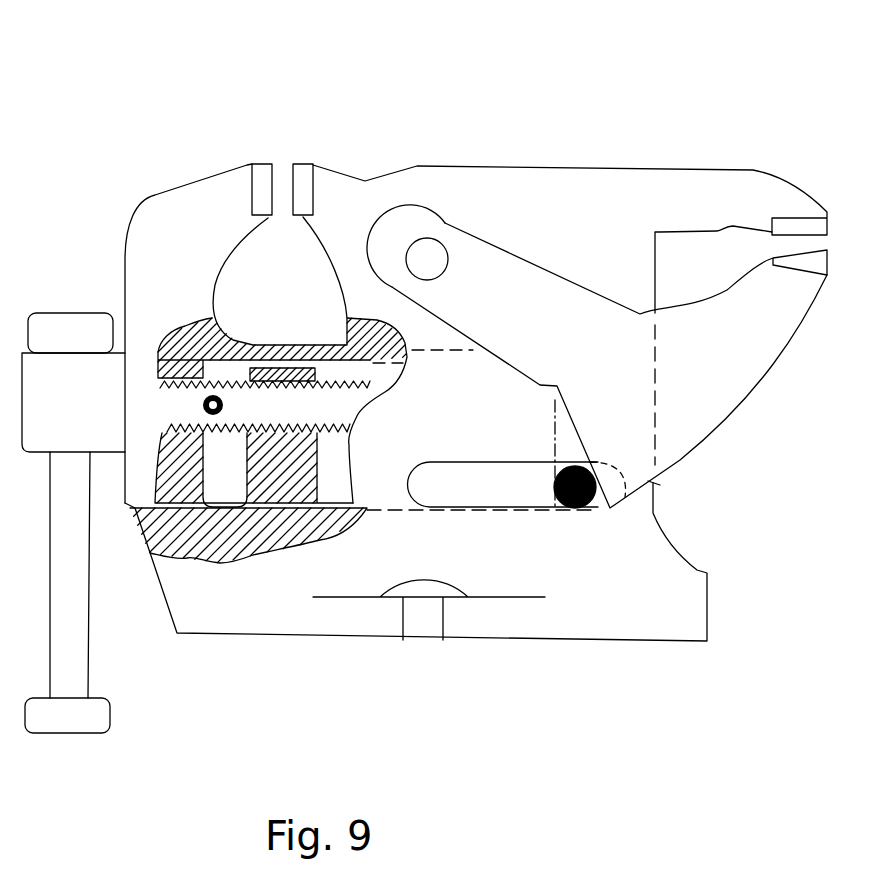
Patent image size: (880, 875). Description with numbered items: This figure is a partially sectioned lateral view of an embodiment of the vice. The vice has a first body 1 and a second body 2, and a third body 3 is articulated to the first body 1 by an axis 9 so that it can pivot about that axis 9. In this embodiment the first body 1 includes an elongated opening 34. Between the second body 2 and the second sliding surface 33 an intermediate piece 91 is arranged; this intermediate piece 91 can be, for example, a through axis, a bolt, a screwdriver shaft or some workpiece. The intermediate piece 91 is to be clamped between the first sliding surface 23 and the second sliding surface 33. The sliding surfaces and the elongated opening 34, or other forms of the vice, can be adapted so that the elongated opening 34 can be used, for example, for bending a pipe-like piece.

The first body 1 is at (362, 195).
The second body 2 is at (182, 185).
The third body 3 is at (733, 352).
The axis 9 is at (432, 250).
The first sliding surface 23 is at (550, 505).
The second sliding surface 33 is at (653, 483).
The elongated opening 34 is at (480, 508).
The intermediate piece 91 is at (570, 508).